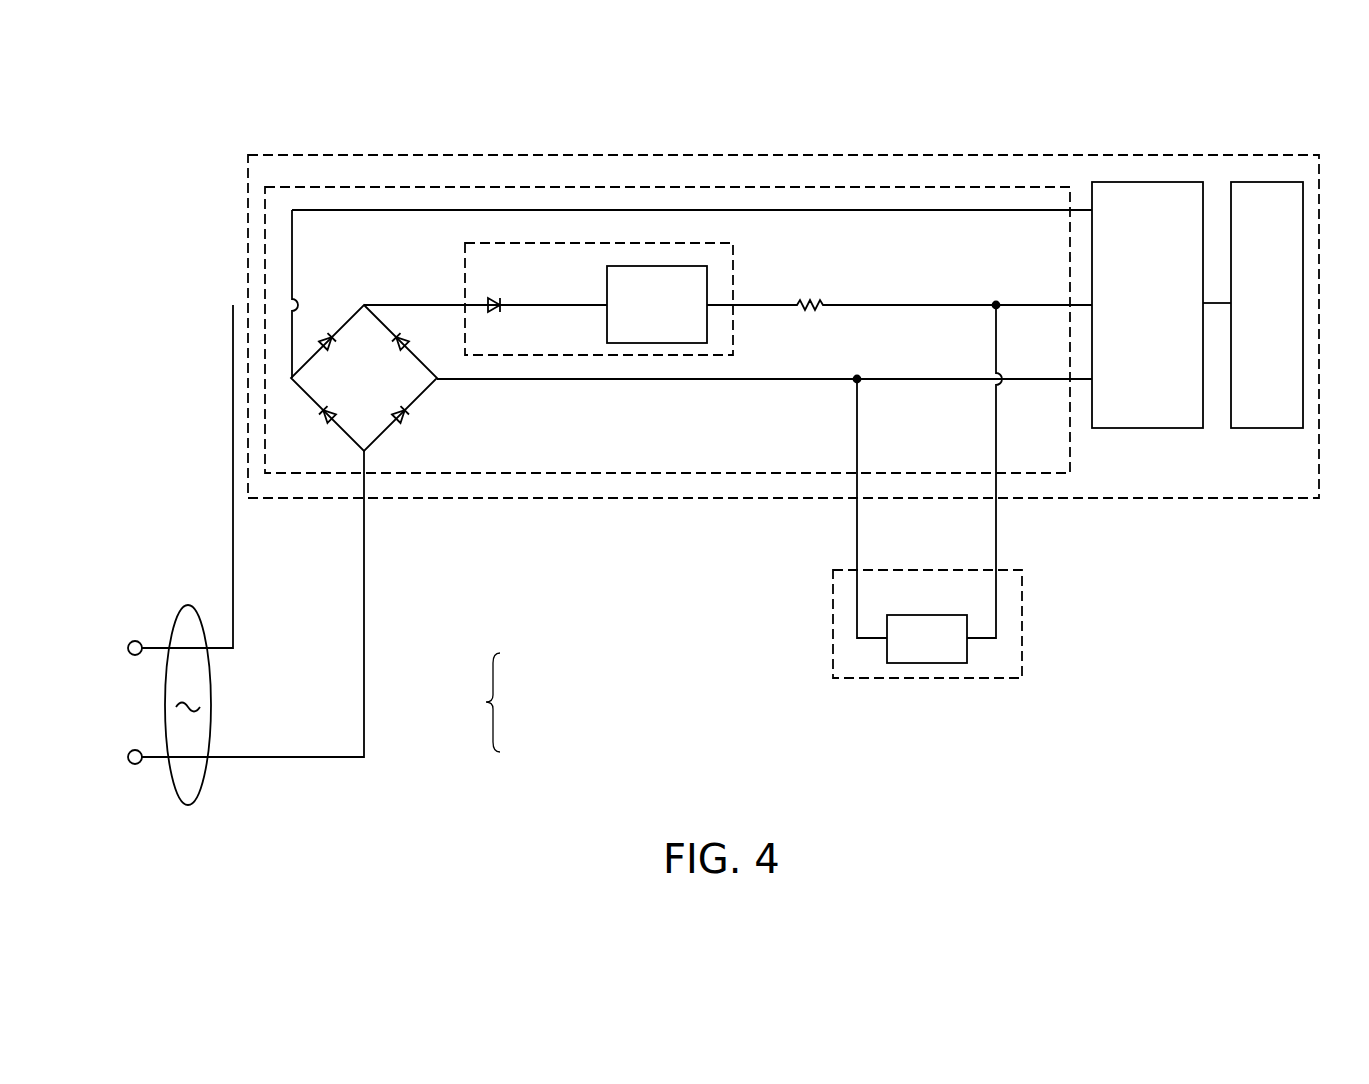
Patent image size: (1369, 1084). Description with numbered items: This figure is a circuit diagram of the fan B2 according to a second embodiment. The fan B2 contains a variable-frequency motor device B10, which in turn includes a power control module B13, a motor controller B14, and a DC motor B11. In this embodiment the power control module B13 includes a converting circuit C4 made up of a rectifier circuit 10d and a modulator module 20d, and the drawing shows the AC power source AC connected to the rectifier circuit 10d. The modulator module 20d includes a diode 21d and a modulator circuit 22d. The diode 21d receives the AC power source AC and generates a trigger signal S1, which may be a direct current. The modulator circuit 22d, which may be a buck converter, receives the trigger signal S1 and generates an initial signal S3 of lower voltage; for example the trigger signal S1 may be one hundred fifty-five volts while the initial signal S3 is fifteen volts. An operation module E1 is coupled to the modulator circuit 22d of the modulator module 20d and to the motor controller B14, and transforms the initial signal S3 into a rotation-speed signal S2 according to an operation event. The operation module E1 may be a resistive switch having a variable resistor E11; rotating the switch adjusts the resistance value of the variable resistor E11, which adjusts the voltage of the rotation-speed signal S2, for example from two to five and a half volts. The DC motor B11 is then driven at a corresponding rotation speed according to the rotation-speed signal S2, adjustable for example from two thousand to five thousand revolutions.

The fan B2 is at (175, 162).
The variable-frequency motor device B10 is at (247, 210).
The power control module B13 is at (264, 258).
The motor controller B14 is at (1172, 322).
The DC motor B11 is at (1290, 319).
The rectifier circuit 10d is at (421, 397).
The modulator module 20d is at (465, 261).
The diode 21d is at (494, 295).
The modulator circuit 22d is at (679, 319).
The trigger signal S1 is at (575, 297).
The rotation-speed signal S2 is at (1039, 299).
The initial signal S3 is at (759, 297).
The operation module E1 is at (833, 597).
The variable resistor E11 is at (949, 649).
The AC power source AC is at (188, 605).
The converting circuit C4 is at (501, 702).